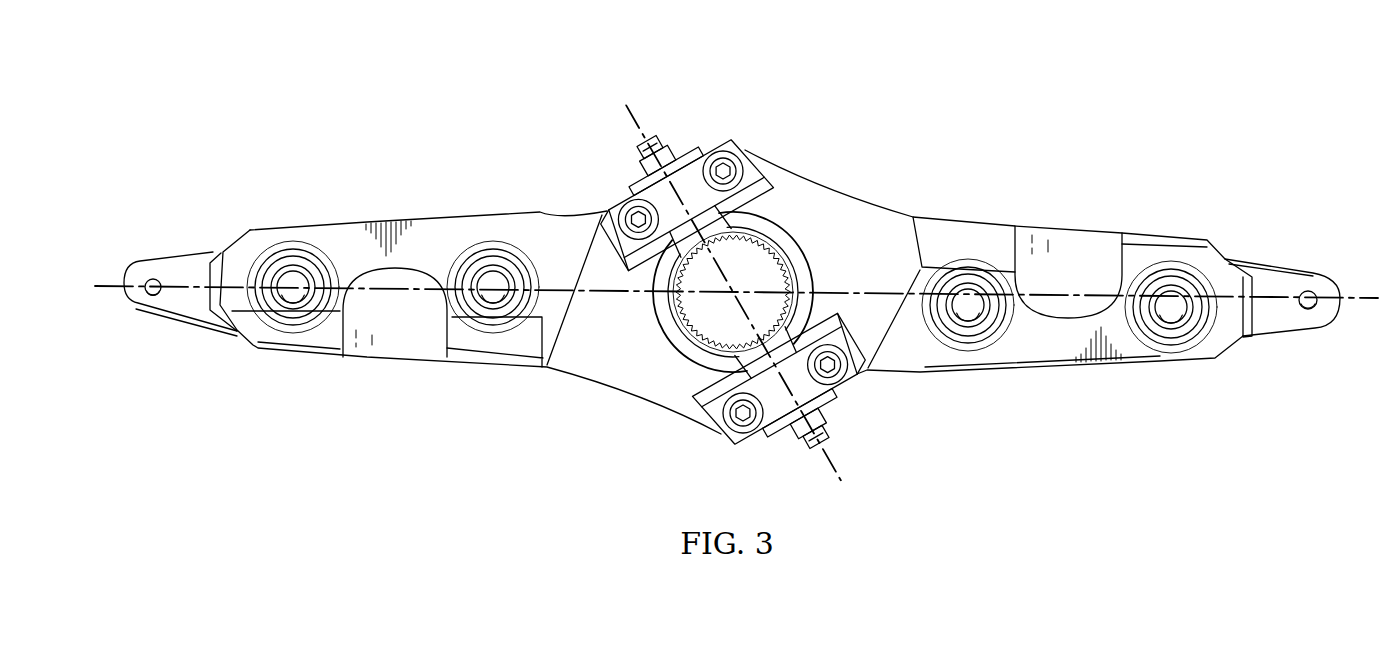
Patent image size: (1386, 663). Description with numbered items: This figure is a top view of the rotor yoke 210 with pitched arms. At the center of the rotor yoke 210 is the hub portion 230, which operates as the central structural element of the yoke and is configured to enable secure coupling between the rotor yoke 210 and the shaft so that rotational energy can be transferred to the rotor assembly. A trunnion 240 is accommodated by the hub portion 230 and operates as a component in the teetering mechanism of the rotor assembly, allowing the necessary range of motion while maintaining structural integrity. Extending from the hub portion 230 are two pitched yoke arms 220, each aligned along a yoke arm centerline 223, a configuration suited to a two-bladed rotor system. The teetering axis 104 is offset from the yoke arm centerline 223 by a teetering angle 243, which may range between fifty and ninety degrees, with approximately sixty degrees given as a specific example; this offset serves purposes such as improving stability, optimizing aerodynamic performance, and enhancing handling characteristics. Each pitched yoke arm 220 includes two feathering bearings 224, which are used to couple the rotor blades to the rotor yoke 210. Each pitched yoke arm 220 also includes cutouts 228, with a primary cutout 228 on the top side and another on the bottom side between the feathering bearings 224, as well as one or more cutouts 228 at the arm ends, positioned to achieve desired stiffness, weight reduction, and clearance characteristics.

The teetering axis 104 is at (829, 474).
The rotor yoke 210 is at (736, 271).
The pitched yoke arm 220 is at (286, 332).
The yoke arm centerline 223 is at (1277, 297).
The feathering bearing 224 is at (293, 260).
The cutout 228 is at (395, 340).
The hub portion 230 is at (651, 346).
The trunnion 240 is at (666, 352).
The teetering angle 243 is at (682, 242).